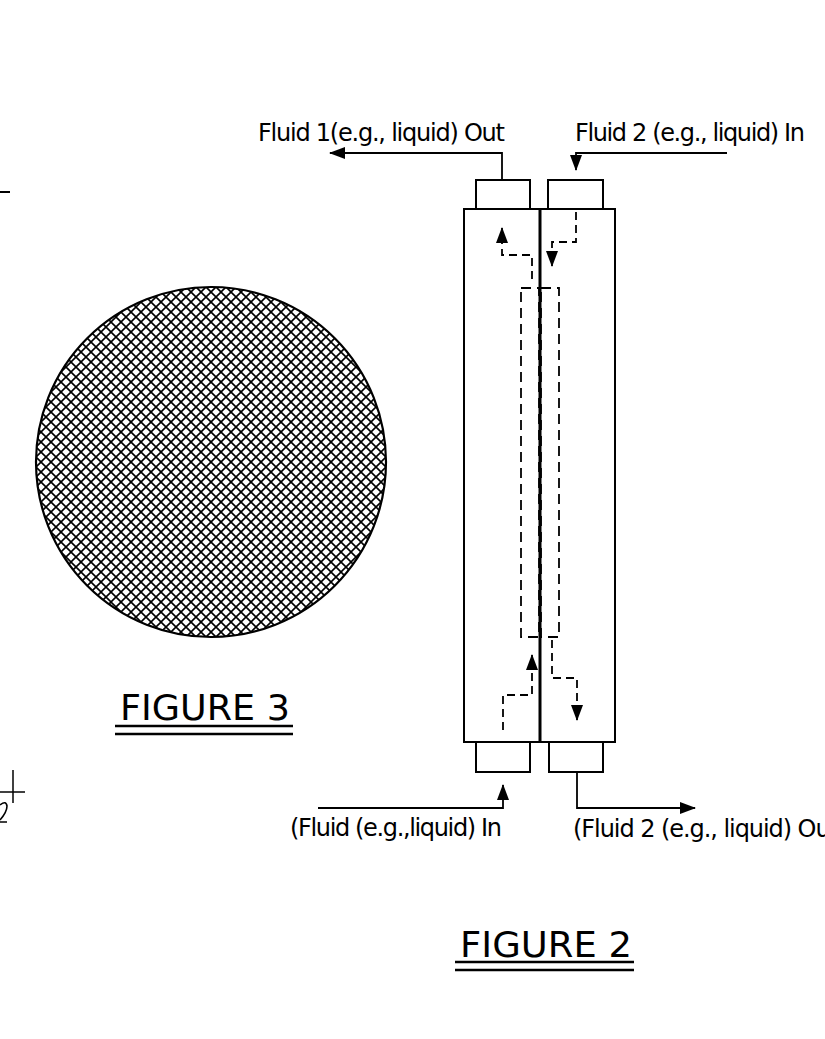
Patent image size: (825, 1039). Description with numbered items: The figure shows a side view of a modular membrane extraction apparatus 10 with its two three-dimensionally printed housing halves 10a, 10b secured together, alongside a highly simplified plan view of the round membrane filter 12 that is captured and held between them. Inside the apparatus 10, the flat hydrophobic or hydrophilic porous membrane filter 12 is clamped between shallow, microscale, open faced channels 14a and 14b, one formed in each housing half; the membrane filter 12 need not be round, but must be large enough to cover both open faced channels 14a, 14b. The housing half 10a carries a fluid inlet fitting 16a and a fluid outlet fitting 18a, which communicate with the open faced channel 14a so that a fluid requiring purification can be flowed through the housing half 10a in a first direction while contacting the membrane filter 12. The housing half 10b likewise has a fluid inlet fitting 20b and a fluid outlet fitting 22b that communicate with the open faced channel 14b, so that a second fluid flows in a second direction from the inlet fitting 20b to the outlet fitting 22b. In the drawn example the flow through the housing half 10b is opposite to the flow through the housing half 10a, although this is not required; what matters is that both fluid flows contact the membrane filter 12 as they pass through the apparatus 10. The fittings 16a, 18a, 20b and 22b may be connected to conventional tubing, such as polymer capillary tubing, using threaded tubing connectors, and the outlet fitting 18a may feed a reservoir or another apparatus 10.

In FIG. 2, the modular membrane extraction apparatus 10 is at (543, 403).
In FIG. 2, the housing half 10a is at (484, 257).
In FIG. 2, the housing half 10b is at (597, 257).
In FIG. 3, the membrane filter 12 is at (222, 285).
In FIG. 2, the membrane filter 12 is at (542, 495).
In FIG. 2, the open faced channel 14a is at (522, 322).
In FIG. 2, the open faced channel 14b is at (560, 405).
In FIG. 2, the fluid inlet fitting 16a is at (488, 757).
In FIG. 2, the fluid outlet fitting 18a is at (486, 197).
In FIG. 2, the fluid inlet fitting 20b is at (592, 195).
In FIG. 2, the fluid outlet fitting 22b is at (592, 757).